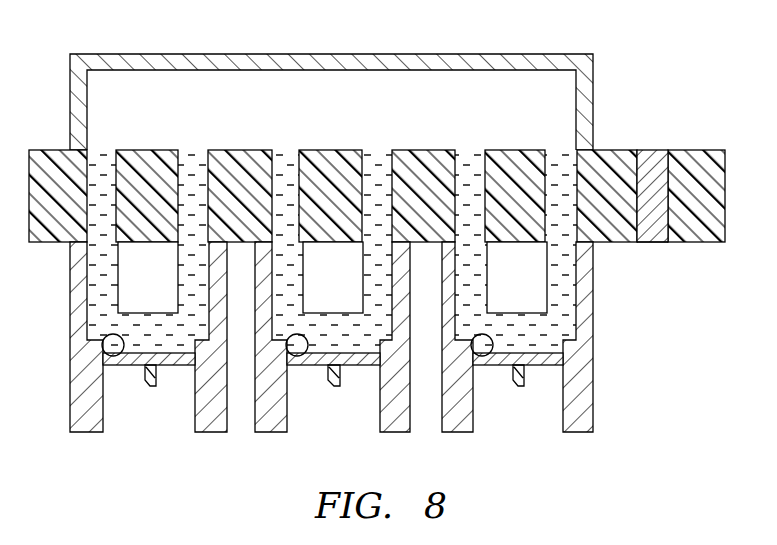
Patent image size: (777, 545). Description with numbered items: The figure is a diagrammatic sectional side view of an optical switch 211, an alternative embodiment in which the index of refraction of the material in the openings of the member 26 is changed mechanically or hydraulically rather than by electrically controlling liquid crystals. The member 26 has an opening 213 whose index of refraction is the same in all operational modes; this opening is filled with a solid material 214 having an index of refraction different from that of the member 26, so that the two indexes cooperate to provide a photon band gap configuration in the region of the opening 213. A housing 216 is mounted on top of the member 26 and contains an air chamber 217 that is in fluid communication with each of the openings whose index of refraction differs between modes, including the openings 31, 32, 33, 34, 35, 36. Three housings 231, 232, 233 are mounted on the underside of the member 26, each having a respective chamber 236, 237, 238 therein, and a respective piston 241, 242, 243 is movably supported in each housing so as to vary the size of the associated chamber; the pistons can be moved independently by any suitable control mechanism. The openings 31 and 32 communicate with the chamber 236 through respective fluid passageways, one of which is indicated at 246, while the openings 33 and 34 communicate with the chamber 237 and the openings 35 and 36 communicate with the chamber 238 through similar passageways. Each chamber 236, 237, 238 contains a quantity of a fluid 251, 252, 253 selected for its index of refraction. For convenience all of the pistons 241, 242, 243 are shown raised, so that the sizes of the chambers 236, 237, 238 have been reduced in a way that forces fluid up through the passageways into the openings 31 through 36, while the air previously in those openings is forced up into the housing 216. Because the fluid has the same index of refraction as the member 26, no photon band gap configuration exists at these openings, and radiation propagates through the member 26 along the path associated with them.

The optical switch 211 is at (368, 81).
The opening 213 is at (664, 158).
The solid material 214 is at (656, 243).
The housing 216 is at (328, 62).
The air chamber 217 is at (328, 107).
The member 26 is at (718, 206).
The opening 31 is at (115, 157).
The opening 32 is at (205, 158).
The opening 33 is at (298, 158).
The opening 34 is at (388, 160).
The opening 35 is at (483, 160).
The opening 36 is at (547, 156).
The housing 231 is at (87, 429).
The housing 232 is at (278, 429).
The housing 233 is at (453, 429).
The chamber 236 is at (121, 364).
The chamber 237 is at (304, 364).
The chamber 238 is at (488, 364).
The piston 241 is at (178, 366).
The piston 242 is at (361, 366).
The piston 243 is at (544, 366).
The fluid passageway 246 is at (86, 290).
The fluid 251 is at (151, 318).
The fluid 252 is at (336, 318).
The fluid 253 is at (524, 318).